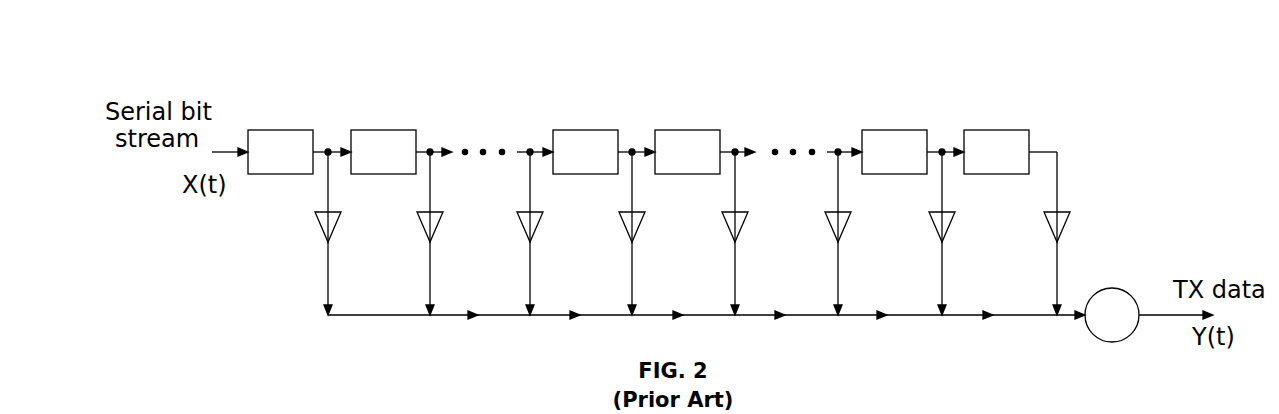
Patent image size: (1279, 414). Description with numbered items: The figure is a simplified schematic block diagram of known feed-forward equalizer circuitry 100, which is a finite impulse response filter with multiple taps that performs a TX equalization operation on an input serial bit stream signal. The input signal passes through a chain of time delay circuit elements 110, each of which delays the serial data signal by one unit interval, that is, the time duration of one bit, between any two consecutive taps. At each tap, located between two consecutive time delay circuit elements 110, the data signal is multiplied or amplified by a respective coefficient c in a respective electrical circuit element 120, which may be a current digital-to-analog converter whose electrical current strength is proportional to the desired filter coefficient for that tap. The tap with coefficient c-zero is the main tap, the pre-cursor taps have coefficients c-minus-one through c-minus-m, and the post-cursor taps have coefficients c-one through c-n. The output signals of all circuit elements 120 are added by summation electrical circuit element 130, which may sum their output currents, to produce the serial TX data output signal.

The feed-forward equalizer circuitry 100 is at (219, 48).
The time delay circuit element 110 is at (281, 130).
The electrical circuit element 120 is at (337, 211).
The summation electrical circuit element 130 is at (1112, 288).